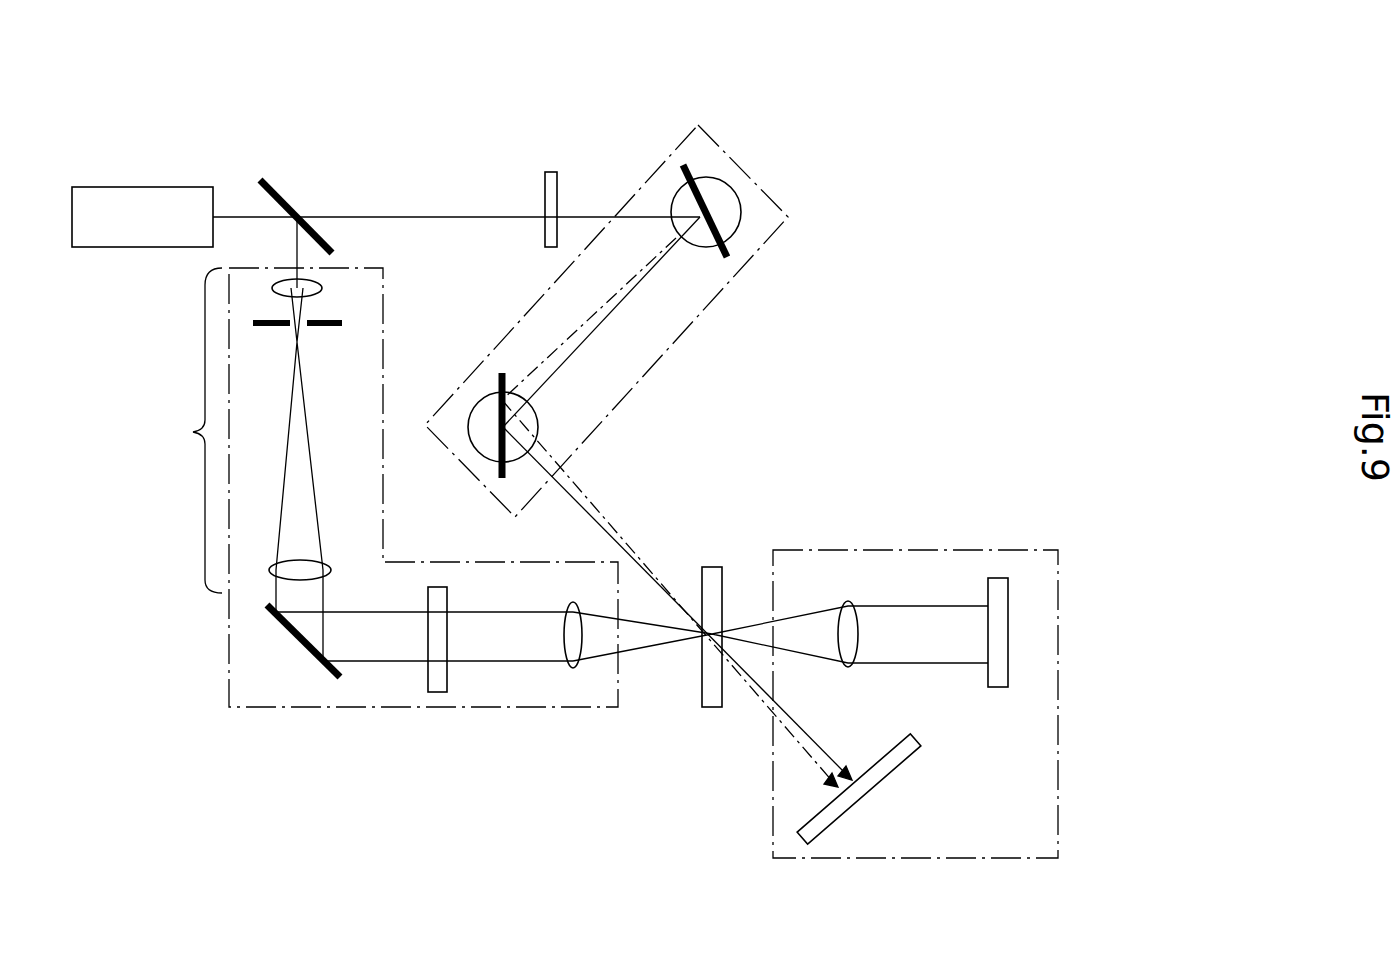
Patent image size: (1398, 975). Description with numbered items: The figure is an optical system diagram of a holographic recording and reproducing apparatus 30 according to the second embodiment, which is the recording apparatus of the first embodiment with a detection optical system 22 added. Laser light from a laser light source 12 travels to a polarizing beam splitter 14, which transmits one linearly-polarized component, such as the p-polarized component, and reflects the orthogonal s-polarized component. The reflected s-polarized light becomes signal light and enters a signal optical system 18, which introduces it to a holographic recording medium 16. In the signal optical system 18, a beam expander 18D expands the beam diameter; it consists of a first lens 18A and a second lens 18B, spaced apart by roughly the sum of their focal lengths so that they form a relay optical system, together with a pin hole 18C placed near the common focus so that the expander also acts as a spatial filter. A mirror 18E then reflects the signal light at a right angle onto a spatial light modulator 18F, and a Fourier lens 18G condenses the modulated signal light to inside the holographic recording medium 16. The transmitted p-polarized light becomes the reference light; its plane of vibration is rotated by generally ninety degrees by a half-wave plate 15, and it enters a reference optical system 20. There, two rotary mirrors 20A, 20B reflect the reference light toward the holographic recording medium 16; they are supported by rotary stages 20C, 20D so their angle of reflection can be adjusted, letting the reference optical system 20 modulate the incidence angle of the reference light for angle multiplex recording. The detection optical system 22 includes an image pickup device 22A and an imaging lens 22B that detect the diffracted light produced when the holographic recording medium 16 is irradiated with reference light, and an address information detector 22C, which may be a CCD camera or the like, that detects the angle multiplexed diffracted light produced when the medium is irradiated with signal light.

The holographic recording and reproducing apparatus 30 is at (563, 86).
The laser light source 12 is at (120, 187).
The polarizing beam splitter 14 is at (278, 193).
The half-wave plate 15 is at (547, 197).
The holographic recording medium 16 is at (712, 568).
The signal optical system 18 is at (229, 646).
The first lens 18A is at (315, 290).
The second lens 18B is at (328, 562).
The pin hole 18C is at (340, 320).
The beam expander 18D is at (193, 432).
The mirror 18E is at (314, 656).
The spatial light modulator 18F is at (438, 683).
The Fourier lens 18G is at (573, 668).
The reference optical system 20 is at (722, 150).
The first rotary mirror 20A is at (688, 168).
The second rotary mirror 20B is at (508, 482).
The rotary stage 20C is at (740, 206).
The rotary stage 20D is at (538, 412).
The detection optical system 22 is at (1058, 800).
The image pickup device 22A is at (1001, 590).
The imaging lens 22B is at (848, 603).
The address information detector 22C is at (833, 815).